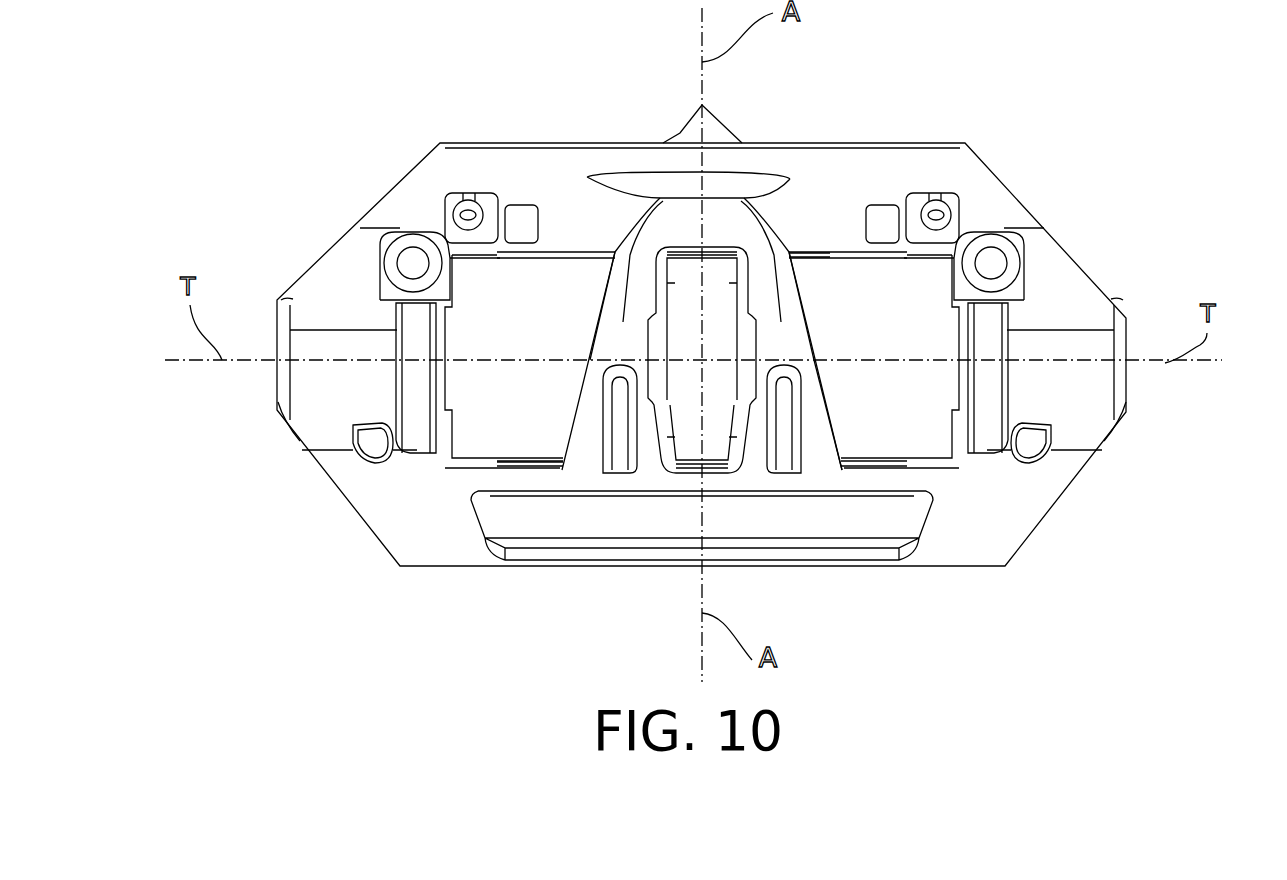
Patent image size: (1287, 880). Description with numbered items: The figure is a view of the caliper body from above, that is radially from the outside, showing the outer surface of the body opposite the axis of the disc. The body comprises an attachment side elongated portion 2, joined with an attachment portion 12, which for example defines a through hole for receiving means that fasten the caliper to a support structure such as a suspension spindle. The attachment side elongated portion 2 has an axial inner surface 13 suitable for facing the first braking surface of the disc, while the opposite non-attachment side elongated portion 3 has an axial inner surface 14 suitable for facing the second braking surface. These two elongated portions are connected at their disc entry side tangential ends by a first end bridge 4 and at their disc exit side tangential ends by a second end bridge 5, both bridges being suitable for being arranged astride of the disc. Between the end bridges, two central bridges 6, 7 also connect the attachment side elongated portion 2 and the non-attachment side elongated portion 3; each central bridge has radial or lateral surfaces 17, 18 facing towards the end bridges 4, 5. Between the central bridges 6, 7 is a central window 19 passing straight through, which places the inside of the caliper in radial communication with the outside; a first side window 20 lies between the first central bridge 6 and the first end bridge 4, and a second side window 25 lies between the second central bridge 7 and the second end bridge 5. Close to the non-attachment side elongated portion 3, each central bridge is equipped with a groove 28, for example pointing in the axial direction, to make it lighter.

The attachment side elongated portion 2 is at (832, 185).
The non-attachment side elongated portion 3 is at (858, 553).
The first end bridge 4 is at (338, 343).
The second end bridge 5 is at (1070, 348).
The first central bridge 6 is at (623, 322).
The second central bridge 7 is at (787, 327).
The attachment portion 12 is at (413, 262).
The axial inner surface 13 is at (812, 253).
The axial inner surface 14 is at (492, 460).
The radial or lateral surface 17 is at (597, 325).
The radial or lateral surface 18 is at (827, 402).
The central window 19 is at (704, 351).
The first side window 20 is at (545, 341).
The second side window 25 is at (905, 349).
The undercut or groove 28 is at (618, 448).